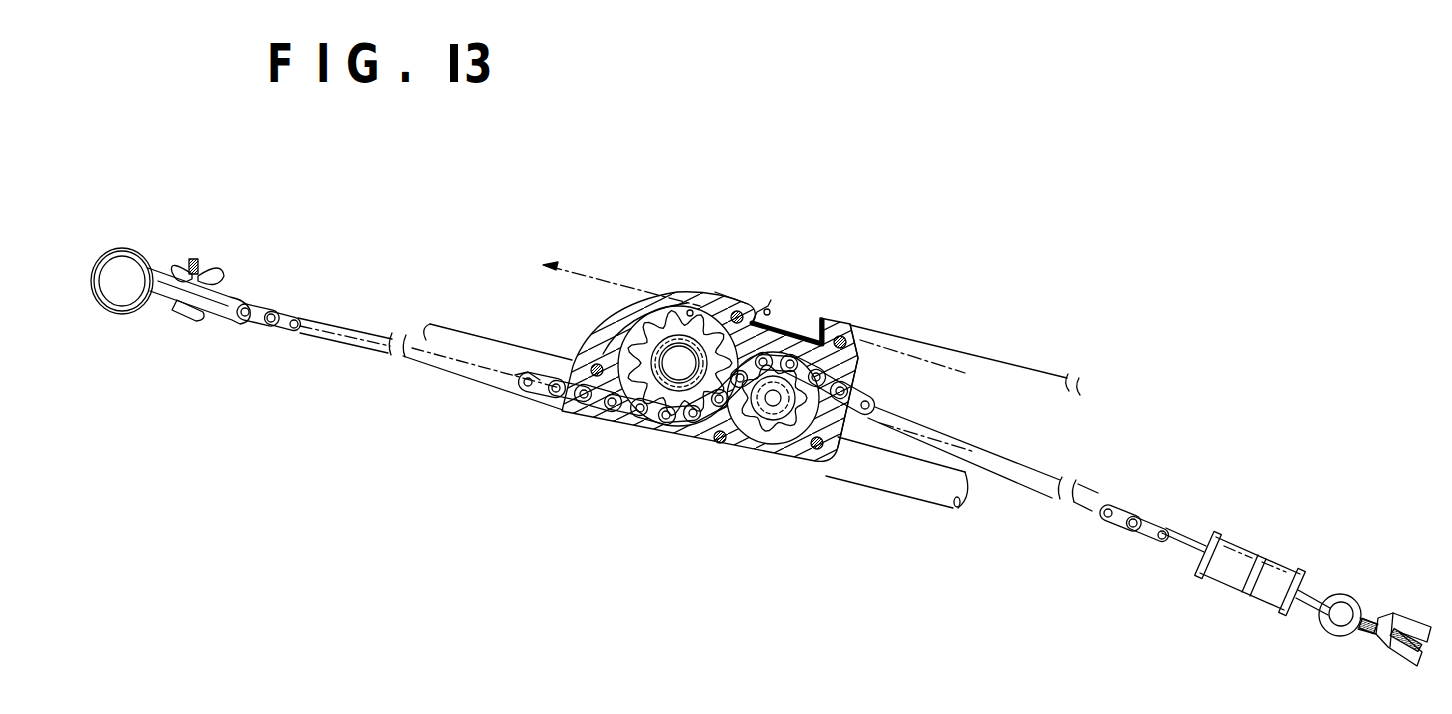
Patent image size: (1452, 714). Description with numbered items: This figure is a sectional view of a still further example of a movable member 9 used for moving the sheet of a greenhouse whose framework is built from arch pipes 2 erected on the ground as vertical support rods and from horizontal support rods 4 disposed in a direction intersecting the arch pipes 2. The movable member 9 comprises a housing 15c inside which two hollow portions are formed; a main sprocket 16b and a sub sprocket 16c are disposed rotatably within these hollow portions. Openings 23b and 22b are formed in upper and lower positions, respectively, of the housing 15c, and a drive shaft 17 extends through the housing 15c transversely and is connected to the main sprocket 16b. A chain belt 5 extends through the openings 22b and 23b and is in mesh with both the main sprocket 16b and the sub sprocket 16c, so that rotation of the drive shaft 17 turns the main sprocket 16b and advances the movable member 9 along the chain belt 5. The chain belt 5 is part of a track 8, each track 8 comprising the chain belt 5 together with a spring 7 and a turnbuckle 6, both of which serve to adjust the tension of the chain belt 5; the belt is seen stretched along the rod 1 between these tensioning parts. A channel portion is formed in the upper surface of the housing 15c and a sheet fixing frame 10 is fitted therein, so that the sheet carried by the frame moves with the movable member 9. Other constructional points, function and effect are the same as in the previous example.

The rod 1 is at (1003, 371).
The arch pipe 2 is at (470, 344).
The horizontal support rod 4 is at (141, 258).
The chain belt 5 is at (532, 366).
The turnbuckle 6 is at (1395, 622).
The spring 7 is at (1208, 528).
The track 8 is at (353, 326).
The movable member 9 is at (744, 301).
The sheet fixing frame 10 is at (790, 321).
The housing 15c is at (684, 433).
The main sprocket 16b is at (691, 311).
The sub sprocket 16c is at (777, 438).
The drive shaft 17 is at (652, 414).
The opening 22b is at (862, 374).
The opening 23b is at (573, 377).